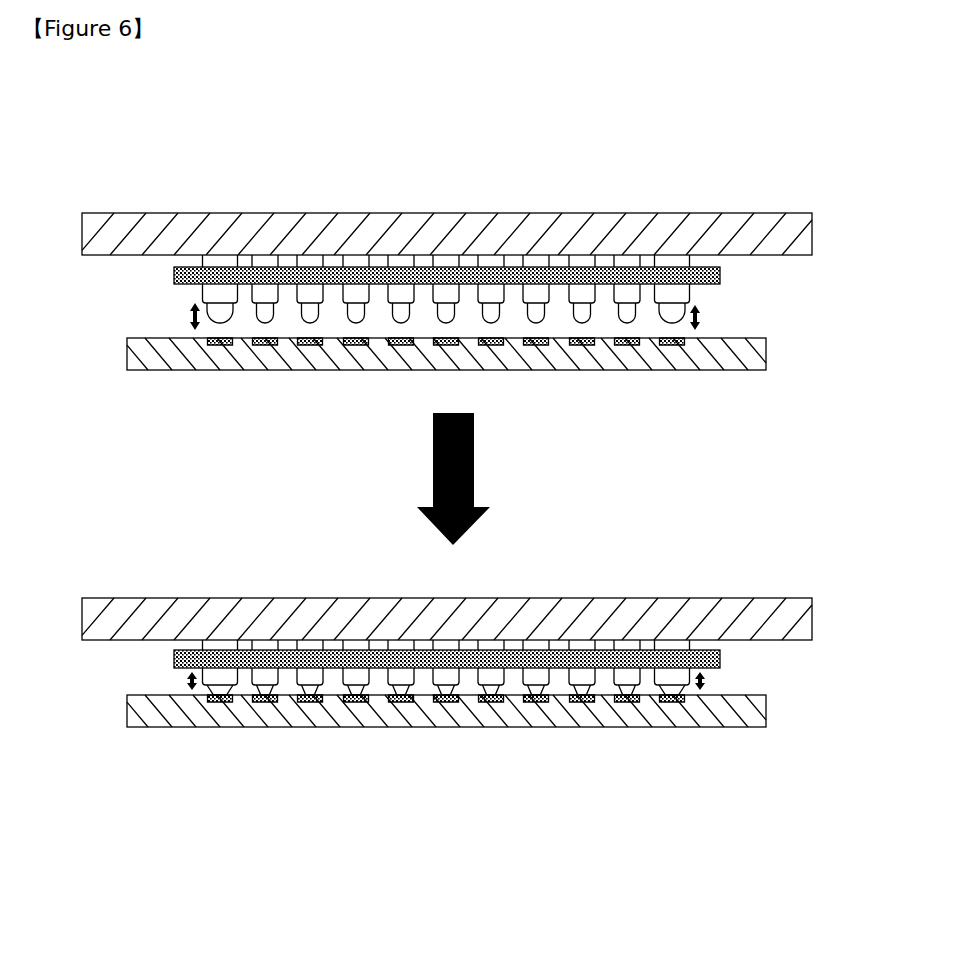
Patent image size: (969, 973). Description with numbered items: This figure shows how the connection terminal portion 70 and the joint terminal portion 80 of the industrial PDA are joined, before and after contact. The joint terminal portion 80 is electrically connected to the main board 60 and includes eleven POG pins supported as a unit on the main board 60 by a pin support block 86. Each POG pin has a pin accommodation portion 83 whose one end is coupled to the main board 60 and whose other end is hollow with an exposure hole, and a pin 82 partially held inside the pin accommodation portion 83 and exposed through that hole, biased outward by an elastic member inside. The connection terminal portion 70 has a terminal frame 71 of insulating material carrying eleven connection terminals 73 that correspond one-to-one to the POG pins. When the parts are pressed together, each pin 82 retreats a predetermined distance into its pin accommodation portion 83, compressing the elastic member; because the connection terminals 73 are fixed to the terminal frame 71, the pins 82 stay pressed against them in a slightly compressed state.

The main board 60 is at (432, 237).
The pin support block 86 is at (582, 275).
The joint terminal portion 80 is at (439, 410).
The pin accommodation portion 83 is at (675, 295).
The pin 82 is at (675, 315).
The connection terminal portion 70 is at (424, 585).
The terminal frame 71 is at (193, 358).
The connection terminals 73 is at (357, 347).